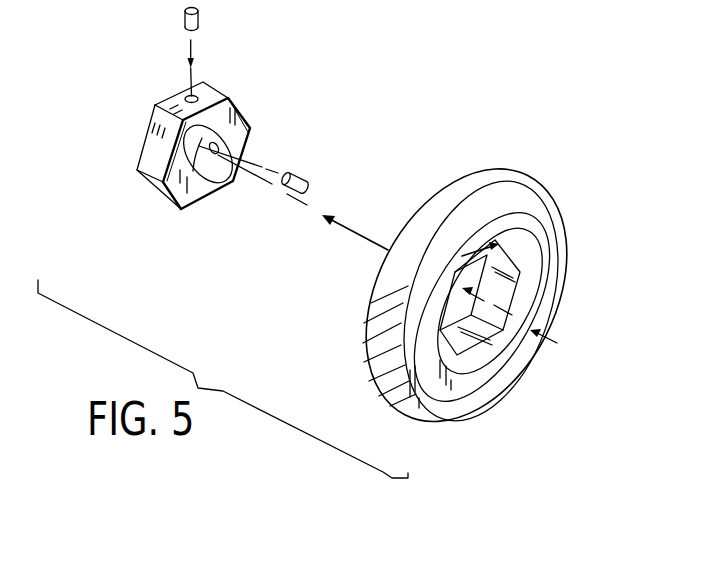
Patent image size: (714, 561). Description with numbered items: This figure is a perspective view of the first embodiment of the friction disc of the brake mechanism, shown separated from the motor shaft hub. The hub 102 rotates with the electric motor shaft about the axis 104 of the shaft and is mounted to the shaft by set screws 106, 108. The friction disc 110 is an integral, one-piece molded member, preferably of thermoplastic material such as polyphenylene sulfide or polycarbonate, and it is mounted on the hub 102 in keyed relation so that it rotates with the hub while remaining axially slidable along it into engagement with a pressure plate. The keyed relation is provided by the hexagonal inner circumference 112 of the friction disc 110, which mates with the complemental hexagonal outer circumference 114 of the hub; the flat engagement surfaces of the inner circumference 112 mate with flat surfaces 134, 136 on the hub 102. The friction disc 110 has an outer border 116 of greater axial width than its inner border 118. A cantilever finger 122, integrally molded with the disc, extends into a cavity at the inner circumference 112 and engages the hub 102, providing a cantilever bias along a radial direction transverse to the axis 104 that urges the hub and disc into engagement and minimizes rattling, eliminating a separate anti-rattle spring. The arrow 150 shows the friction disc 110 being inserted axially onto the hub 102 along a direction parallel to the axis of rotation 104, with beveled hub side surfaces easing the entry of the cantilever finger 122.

The hub 102 is at (168, 186).
The axis 104 is at (253, 178).
The set screw 106 is at (198, 13).
The set screw 108 is at (303, 174).
The friction disc 110 is at (500, 183).
The hexagonal inner circumference 112 is at (500, 295).
The hexagonal outer circumference 114 is at (213, 82).
The outer border 116 is at (470, 400).
The inner border 118 is at (477, 363).
The cantilever finger 122 is at (505, 240).
The flat surface 134 is at (174, 104).
The flat surface 136 is at (147, 162).
The arrow 150 is at (347, 230).